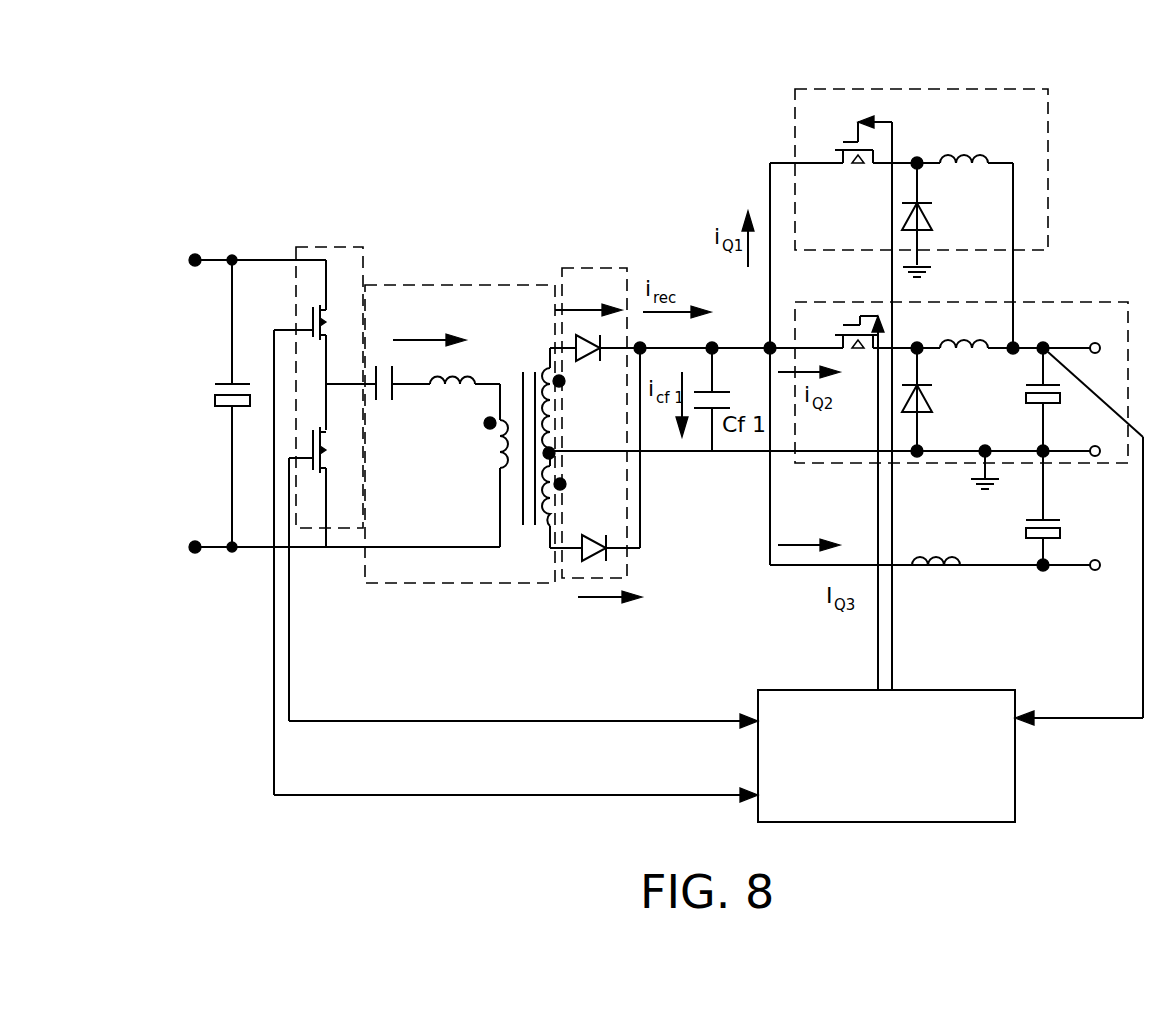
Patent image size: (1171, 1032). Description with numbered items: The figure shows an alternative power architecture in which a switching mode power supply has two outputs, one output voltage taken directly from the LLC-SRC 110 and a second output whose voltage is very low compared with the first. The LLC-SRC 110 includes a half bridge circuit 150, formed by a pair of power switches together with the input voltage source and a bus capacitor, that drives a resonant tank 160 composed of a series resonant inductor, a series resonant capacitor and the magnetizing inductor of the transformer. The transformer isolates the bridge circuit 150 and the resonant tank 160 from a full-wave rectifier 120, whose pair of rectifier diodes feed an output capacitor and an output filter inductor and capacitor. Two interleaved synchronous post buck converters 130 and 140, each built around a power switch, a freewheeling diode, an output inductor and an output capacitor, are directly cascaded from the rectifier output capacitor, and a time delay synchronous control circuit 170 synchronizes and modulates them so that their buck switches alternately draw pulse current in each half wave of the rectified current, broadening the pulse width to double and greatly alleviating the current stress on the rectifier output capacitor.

The LLC-SRC 110 is at (560, 183).
The full-wave rectifier 120 is at (594, 270).
The post buck converter 130 is at (829, 90).
The post buck converter 140 is at (796, 437).
The bridge circuit 150 is at (316, 247).
The resonant tank 160 is at (470, 289).
The time delay synchronous control circuit 170 is at (893, 822).